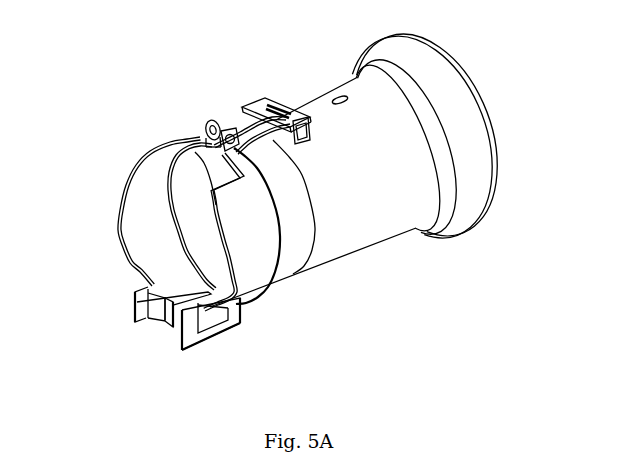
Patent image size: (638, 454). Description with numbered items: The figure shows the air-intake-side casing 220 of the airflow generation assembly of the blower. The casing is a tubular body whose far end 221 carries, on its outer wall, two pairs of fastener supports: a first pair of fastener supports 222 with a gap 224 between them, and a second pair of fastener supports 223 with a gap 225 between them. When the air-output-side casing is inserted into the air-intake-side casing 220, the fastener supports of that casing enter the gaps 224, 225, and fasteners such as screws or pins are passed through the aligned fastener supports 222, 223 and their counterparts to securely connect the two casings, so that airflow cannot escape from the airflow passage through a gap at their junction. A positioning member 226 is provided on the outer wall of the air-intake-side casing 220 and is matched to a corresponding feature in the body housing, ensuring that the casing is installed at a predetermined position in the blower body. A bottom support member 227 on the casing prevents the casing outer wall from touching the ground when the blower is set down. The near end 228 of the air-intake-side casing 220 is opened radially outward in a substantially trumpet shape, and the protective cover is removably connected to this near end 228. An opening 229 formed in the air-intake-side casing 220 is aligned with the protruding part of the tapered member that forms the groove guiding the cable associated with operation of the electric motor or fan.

The air-intake-side casing 220 is at (70, 36).
The far end 221 is at (250, 273).
The first pair of fastener supports 222 is at (206, 126).
The second pair of fastener supports 223 is at (134, 300).
The gap 224 is at (208, 145).
The gap 225 is at (160, 300).
The positioning member 226 is at (269, 101).
The bottom support member 227 is at (210, 333).
The near end 228 is at (467, 190).
The opening 229 is at (340, 96).